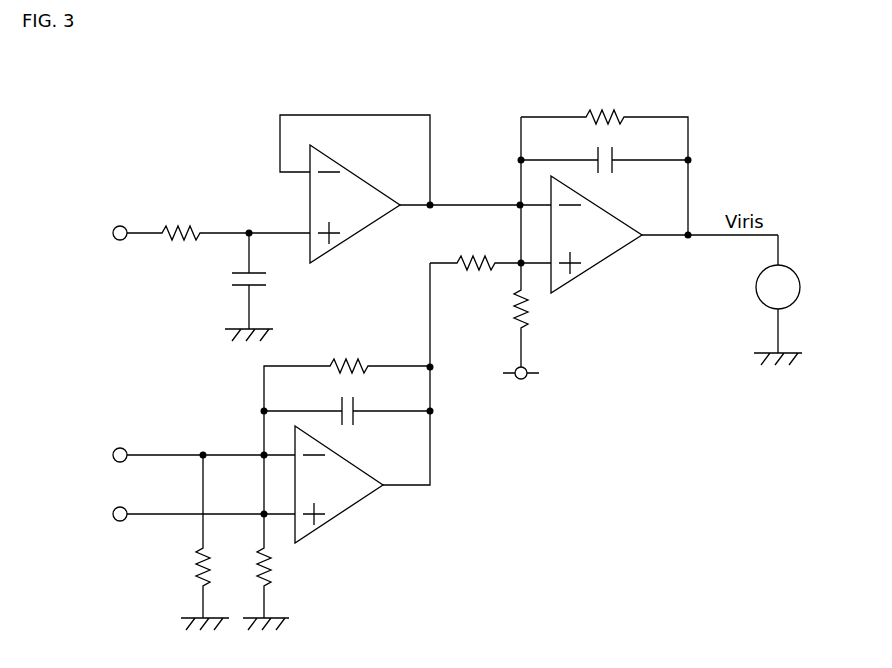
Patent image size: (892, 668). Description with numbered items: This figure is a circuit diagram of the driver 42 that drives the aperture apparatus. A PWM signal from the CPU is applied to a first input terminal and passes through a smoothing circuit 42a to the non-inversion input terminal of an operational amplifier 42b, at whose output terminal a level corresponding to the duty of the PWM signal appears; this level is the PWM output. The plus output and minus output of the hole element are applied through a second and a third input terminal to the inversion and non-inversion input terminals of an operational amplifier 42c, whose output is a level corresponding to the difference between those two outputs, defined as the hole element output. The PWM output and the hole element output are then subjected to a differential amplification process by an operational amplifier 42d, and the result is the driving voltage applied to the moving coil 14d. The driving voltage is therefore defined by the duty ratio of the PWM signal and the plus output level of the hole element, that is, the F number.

The driver 42 is at (228, 80).
The smoothing circuit 42a is at (210, 292).
The operational amplifier 42b is at (270, 179).
The operational amplifier 42c is at (345, 532).
The operational amplifier 42d is at (612, 296).
The moving coil 14d is at (798, 273).